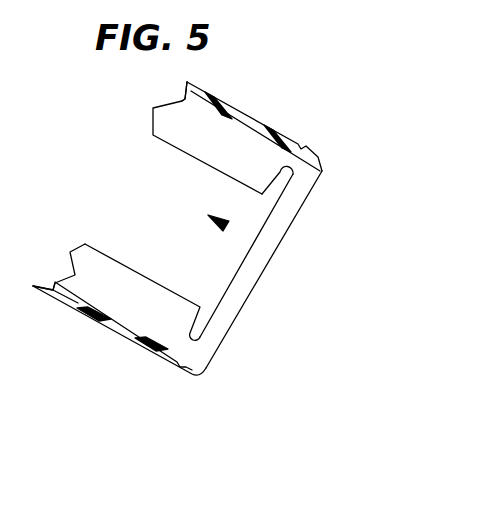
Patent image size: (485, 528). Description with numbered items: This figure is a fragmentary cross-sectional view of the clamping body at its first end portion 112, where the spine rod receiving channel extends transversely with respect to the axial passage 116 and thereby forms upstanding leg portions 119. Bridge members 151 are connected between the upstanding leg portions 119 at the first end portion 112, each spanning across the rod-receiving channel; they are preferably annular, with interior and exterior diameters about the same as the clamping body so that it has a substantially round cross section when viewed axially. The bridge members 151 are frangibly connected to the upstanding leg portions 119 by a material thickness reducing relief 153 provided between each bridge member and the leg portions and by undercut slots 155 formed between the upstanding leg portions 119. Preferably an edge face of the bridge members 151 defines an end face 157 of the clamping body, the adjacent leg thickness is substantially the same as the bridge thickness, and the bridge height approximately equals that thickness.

The first end portion 112 is at (237, 308).
The axial passage 116 is at (226, 226).
The upstanding leg portions 119 is at (250, 120).
The bridge members 151 is at (250, 277).
The material thickness reducing relief 153 is at (171, 382).
The undercut slots 155 is at (184, 335).
The end face 157 is at (308, 197).